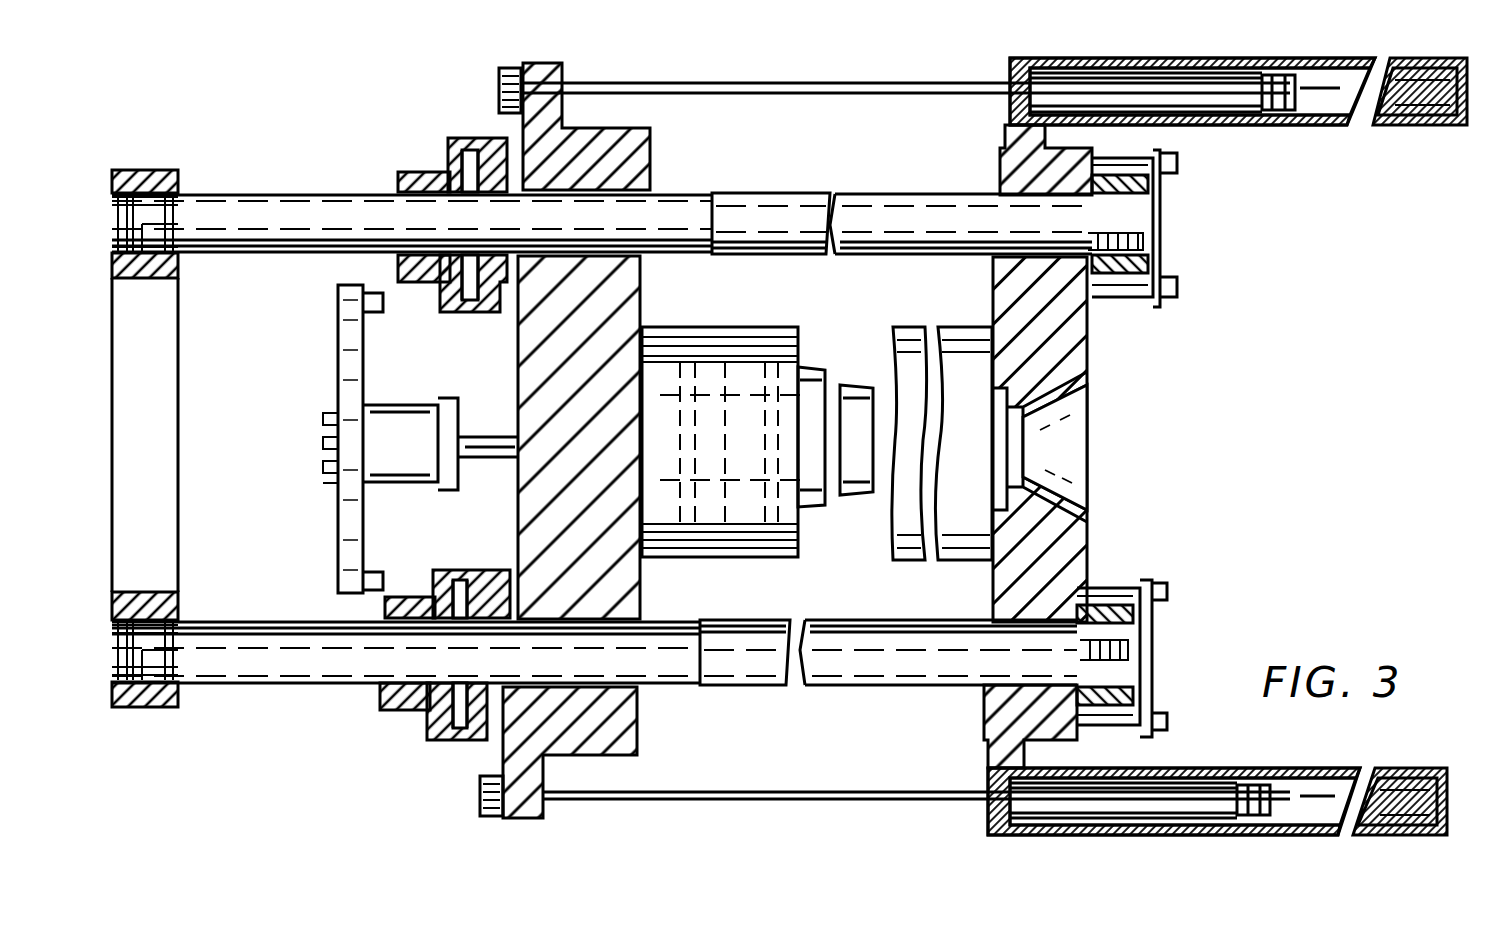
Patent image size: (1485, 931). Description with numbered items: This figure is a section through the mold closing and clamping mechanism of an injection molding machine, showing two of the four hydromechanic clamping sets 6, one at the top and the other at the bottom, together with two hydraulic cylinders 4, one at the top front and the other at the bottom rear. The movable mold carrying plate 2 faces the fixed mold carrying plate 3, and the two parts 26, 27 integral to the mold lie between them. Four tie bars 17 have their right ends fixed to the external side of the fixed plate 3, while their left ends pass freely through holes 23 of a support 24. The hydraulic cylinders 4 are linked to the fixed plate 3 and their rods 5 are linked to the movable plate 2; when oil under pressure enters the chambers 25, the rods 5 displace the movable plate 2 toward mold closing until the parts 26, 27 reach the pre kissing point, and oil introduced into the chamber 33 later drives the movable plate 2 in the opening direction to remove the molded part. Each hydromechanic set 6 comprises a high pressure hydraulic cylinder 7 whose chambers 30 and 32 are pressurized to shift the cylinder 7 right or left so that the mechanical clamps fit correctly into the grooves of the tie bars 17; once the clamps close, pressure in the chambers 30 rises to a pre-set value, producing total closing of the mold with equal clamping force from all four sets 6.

The movable mold carrying plate 2 is at (640, 144).
The fixed mold carrying plate 3 is at (1078, 343).
The hydraulic cylinder 4 is at (1290, 118).
The rod 5 is at (976, 90).
The hydromechanic clamping set 6 is at (478, 138).
The high pressure hydraulic cylinder 7 is at (440, 172).
The tie bar 17 is at (328, 212).
The hole 23 is at (178, 193).
The support 24 is at (114, 176).
The chamber 25 is at (1186, 100).
The mold part 26 is at (810, 370).
The mold part 27 is at (906, 330).
The chamber 30 is at (455, 312).
The chamber 32 is at (474, 312).
The chamber 33 is at (1345, 100).